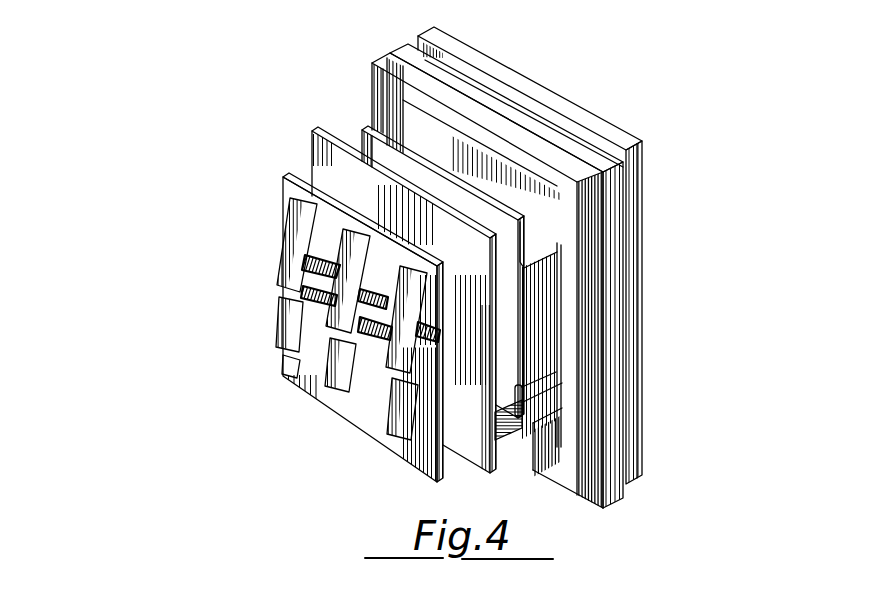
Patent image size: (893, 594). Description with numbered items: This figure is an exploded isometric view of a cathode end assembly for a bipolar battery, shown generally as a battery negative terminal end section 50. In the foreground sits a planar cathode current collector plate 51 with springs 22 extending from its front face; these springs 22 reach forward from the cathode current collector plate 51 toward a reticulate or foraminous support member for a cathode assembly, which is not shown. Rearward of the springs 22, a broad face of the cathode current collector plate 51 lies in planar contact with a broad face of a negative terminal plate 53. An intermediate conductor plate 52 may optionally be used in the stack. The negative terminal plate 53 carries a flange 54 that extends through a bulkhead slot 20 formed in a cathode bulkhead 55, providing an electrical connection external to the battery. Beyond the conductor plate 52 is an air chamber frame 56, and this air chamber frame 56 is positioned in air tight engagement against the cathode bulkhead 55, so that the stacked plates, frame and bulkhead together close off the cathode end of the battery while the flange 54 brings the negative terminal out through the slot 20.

The bulkhead slot 20 is at (609, 405).
The springs 22 is at (277, 327).
The battery negative terminal end section 50 is at (284, 101).
The cathode current collector plate 51 is at (311, 327).
The intermediate conductor plate 52 is at (312, 156).
The negative terminal plate 53 is at (381, 230).
The flange 54 is at (541, 274).
The cathode bulkhead 55 is at (559, 255).
The air chamber frame 56 is at (532, 276).